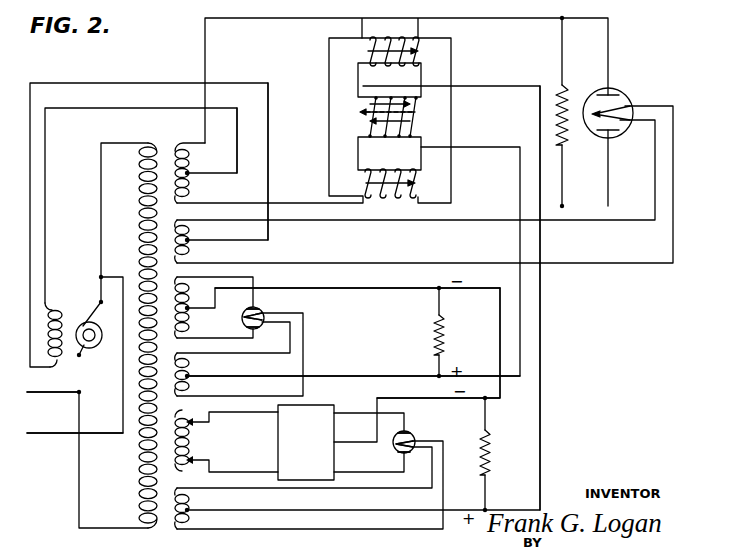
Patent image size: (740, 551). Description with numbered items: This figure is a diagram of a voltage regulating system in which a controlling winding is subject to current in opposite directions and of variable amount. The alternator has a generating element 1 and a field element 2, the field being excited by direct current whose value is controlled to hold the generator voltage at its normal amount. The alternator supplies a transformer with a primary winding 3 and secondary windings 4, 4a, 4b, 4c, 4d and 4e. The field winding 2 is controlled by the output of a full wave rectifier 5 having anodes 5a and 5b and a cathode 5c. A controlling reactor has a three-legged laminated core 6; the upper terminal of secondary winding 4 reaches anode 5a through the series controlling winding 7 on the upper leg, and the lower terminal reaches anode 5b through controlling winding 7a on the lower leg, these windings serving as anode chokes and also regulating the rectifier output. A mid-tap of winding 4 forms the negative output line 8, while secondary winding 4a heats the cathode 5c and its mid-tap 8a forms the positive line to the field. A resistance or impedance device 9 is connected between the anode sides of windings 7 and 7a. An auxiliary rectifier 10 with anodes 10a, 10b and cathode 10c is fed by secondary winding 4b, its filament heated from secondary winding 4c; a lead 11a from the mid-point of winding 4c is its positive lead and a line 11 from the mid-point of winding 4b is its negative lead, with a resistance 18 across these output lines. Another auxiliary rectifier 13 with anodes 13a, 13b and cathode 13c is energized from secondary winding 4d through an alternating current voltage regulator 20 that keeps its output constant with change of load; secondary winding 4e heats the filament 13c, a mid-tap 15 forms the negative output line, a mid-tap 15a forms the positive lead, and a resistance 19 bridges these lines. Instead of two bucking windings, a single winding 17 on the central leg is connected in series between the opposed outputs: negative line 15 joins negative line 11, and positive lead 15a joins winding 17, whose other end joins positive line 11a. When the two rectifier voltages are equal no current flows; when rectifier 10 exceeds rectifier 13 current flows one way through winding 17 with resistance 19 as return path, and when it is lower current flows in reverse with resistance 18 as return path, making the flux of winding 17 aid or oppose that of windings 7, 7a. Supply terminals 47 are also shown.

The generating element 1 is at (97, 328).
The field element 2 is at (66, 319).
The primary winding 3 is at (140, 238).
The secondary winding 4 is at (190, 157).
The secondary winding 4a is at (192, 232).
The secondary winding 4b is at (188, 323).
The secondary winding 4c is at (192, 366).
The secondary winding 4d is at (192, 446).
The secondary winding 4e is at (192, 500).
The rectifier 5 is at (596, 99).
The anode 5a is at (615, 92).
The anode 5b is at (615, 134).
The cathode 5c is at (597, 128).
The laminated core 6 is at (447, 56).
The controlling winding 7 is at (398, 32).
The controlling winding 7a is at (390, 203).
The negative output line 8 is at (237, 144).
The positive line 8a is at (268, 184).
The resistance or impedance device 9 is at (556, 88).
The auxiliary rectifier 10 is at (246, 311).
The anode 10a is at (260, 308).
The anode 10b is at (254, 330).
The cathode 10c is at (244, 325).
The negative lead 11 is at (333, 291).
The positive lead 11a is at (378, 382).
The auxiliary rectifier 13 is at (400, 436).
The anode 13a is at (411, 433).
The anode 13b is at (407, 453).
The cathode 13c is at (396, 449).
The negative output line 15 is at (500, 392).
The positive lead 15a is at (540, 431).
The controlling winding 17 is at (412, 104).
The resistance 18 is at (436, 336).
The resistance 19 is at (490, 457).
The alternating current voltage regulator 20 is at (278, 441).
The supply terminals 47 is at (39, 439).